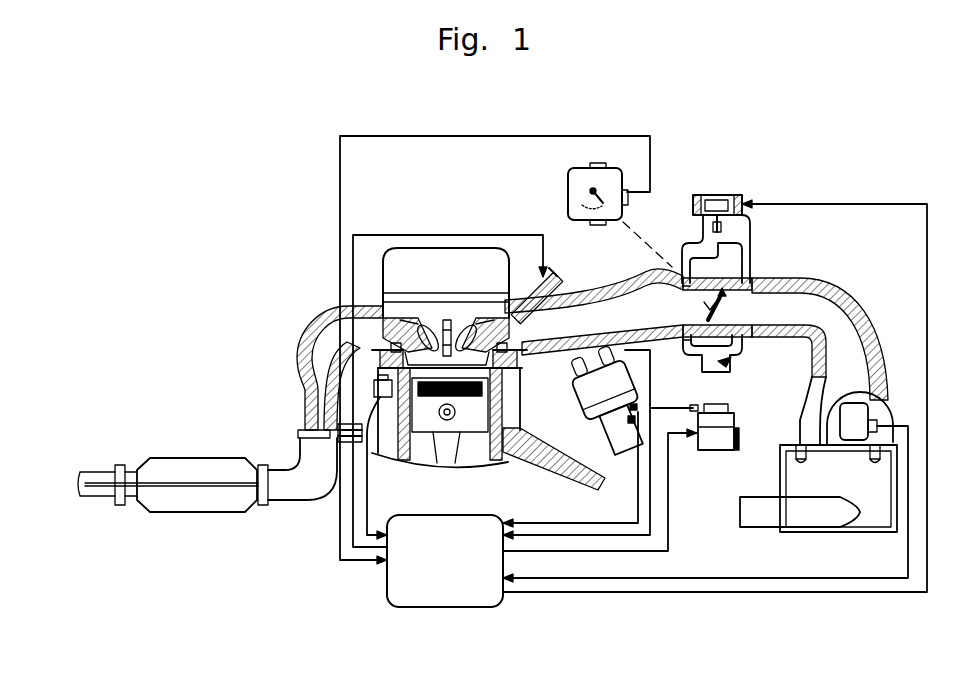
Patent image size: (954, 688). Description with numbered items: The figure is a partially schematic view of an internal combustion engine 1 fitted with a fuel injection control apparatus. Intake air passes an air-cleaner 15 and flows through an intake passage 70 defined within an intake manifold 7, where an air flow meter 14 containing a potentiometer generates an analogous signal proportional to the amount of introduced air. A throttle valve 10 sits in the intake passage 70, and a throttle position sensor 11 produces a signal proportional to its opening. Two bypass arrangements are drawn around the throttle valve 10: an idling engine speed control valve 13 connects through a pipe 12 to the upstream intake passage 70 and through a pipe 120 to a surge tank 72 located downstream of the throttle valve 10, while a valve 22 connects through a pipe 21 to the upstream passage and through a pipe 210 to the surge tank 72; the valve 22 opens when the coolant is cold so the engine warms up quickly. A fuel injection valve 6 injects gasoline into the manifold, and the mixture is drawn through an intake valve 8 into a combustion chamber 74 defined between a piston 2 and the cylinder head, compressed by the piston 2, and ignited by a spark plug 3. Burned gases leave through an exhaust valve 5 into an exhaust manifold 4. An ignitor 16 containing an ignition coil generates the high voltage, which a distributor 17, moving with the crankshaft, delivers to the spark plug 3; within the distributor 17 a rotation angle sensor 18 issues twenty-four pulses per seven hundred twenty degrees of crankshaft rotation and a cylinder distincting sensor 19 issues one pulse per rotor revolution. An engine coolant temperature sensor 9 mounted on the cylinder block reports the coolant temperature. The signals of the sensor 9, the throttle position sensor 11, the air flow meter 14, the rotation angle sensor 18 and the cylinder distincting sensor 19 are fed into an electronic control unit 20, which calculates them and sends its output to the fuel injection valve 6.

The engine 1 is at (468, 226).
The piston 2 is at (473, 434).
The spark plug 3 is at (445, 335).
The exhaust manifold 4 is at (310, 348).
The exhaust valve 5 is at (422, 340).
The fuel injection valve 6 is at (548, 277).
The intake manifold 7 is at (594, 298).
The intake valve 8 is at (469, 350).
The engine coolant temperature sensor 9 is at (383, 402).
The throttle valve 10 is at (726, 303).
The throttle position sensor 11 is at (580, 165).
The pipe 12 is at (752, 265).
The idling engine speed control valve 13 is at (712, 195).
The air flow meter 14 is at (872, 396).
The air-cleaner 15 is at (880, 487).
The ignitor 16 is at (723, 443).
The distributor 17 is at (611, 458).
The rotation angle sensor 18 is at (630, 424).
The cylinder distincting sensor 19 is at (640, 409).
The electronic control unit 20 is at (423, 522).
The pipe 21 is at (748, 343).
The valve 22 is at (722, 364).
The intake passage 70 is at (843, 332).
The surge tank 72 is at (650, 292).
The combustion chamber 74 is at (467, 372).
The pipe 120 is at (684, 250).
The pipe 210 is at (685, 352).